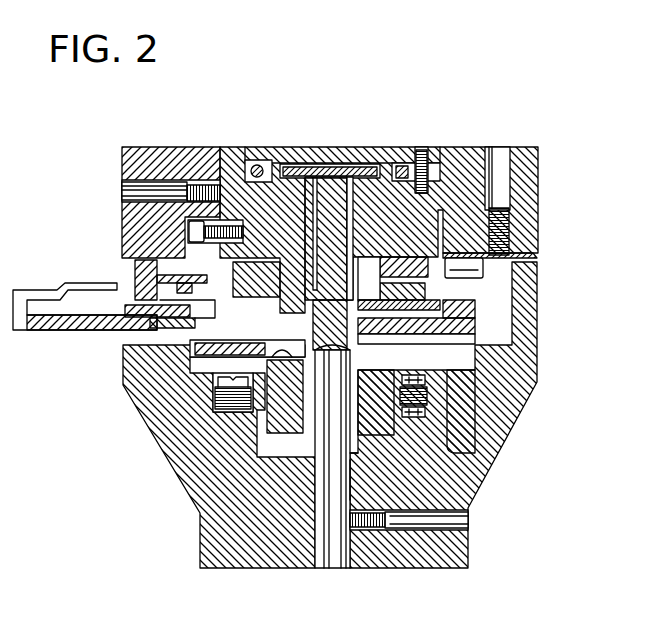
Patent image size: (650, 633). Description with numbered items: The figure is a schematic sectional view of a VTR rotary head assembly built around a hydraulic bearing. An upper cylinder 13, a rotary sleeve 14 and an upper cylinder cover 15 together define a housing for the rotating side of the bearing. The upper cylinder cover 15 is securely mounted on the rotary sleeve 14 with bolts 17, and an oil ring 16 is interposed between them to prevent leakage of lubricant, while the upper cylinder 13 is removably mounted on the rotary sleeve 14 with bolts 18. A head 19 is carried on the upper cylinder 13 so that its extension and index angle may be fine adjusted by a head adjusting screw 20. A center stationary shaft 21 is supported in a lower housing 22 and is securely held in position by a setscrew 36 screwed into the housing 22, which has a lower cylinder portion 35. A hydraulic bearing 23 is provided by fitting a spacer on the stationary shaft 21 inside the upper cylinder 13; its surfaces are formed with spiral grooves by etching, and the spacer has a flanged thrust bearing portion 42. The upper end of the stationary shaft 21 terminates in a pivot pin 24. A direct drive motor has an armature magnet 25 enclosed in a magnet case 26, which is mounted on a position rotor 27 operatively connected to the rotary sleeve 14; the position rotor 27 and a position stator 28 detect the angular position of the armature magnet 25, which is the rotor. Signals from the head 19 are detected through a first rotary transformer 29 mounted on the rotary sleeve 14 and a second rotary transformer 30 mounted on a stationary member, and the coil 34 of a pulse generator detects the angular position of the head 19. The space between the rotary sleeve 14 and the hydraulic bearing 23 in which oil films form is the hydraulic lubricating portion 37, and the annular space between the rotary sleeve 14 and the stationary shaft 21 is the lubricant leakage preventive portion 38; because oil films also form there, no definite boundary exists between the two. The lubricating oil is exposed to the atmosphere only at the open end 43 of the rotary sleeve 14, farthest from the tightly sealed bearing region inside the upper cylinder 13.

The upper cylinder 13 is at (128, 165).
The rotary sleeve 14 is at (221, 148).
The upper cylinder cover 15 is at (278, 155).
The oil ring 16 is at (256, 165).
The bolts 17 is at (434, 173).
The bolts 18 is at (199, 182).
The head 19 is at (505, 262).
The head adjusting screw 20 is at (520, 221).
The center stationary shaft 21 is at (327, 552).
The lower housing 22 is at (258, 548).
The hydraulic bearing 23 is at (353, 170).
The pivot pin 24 is at (319, 165).
The armature magnet 25 is at (457, 355).
The magnet case 26 is at (197, 368).
The position rotor 27 is at (378, 418).
The position stator 28 is at (230, 400).
The first rotary transformer 29 is at (404, 262).
The second rotary transformer 30 is at (422, 294).
The coil 34 is at (157, 320).
The lower cylinder portion 35 is at (538, 357).
The setscrew 36 is at (368, 528).
The hydraulic lubricating portion 37 is at (297, 238).
The lubricant leakage preventive portion 38 is at (311, 360).
The thrust bearing portion 42 is at (369, 166).
The open end 43 is at (368, 455).